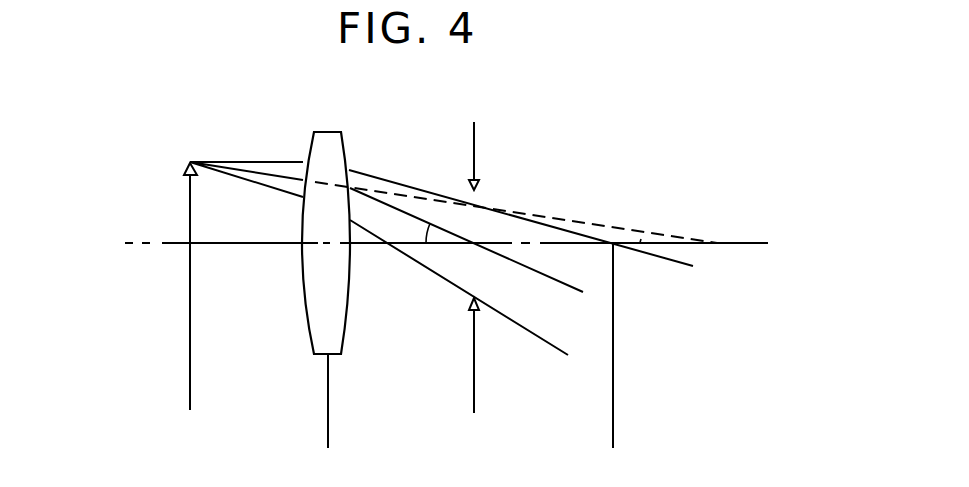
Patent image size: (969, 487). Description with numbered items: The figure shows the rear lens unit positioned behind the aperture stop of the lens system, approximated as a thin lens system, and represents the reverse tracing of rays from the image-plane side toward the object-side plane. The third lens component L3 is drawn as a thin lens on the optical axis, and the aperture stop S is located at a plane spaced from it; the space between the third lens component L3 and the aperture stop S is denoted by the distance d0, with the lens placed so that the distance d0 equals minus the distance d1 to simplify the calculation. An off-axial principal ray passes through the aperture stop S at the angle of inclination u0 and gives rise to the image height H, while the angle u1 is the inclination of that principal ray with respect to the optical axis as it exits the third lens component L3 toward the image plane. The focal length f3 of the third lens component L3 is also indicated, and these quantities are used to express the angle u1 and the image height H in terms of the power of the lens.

The third lens component L3 is at (337, 141).
The aperture stop S is at (475, 146).
The image height H is at (174, 286).
The angle of inclination of the off-axial principal ray at the aperture stop u0 is at (409, 228).
The angle of inclination of the off-axial principal ray exiting the third lens compo u1 is at (629, 235).
The space between the third lens component and the aperture stop d1 is at (316, 396).
The space between the third lens component and the aperture stop d0 is at (461, 396).
The focal length of third lens f3 is at (600, 441).